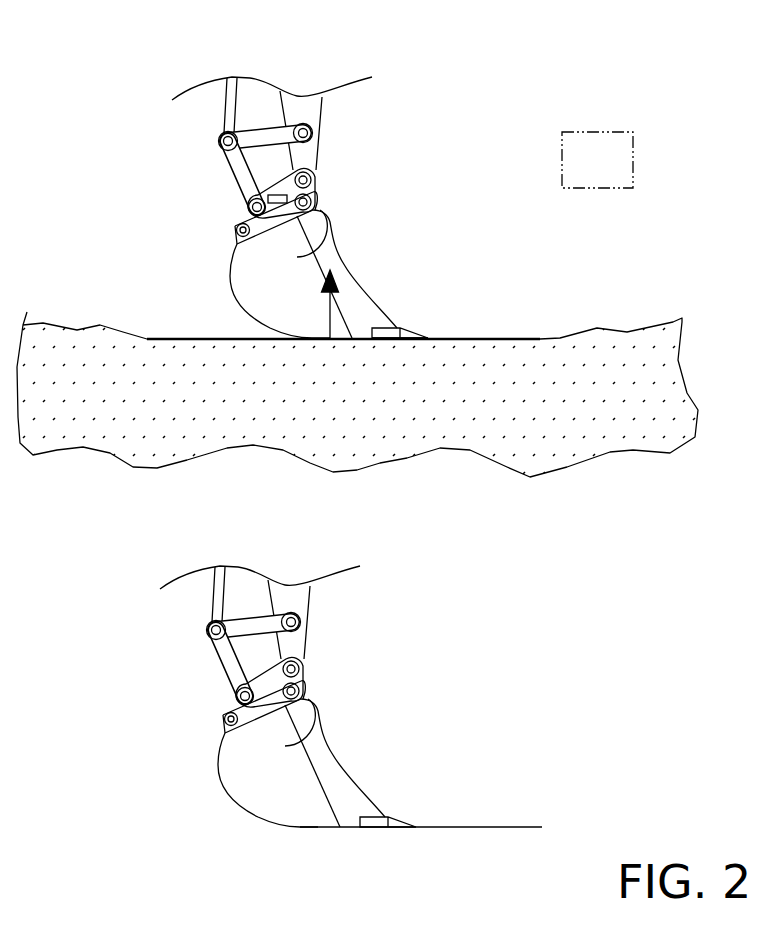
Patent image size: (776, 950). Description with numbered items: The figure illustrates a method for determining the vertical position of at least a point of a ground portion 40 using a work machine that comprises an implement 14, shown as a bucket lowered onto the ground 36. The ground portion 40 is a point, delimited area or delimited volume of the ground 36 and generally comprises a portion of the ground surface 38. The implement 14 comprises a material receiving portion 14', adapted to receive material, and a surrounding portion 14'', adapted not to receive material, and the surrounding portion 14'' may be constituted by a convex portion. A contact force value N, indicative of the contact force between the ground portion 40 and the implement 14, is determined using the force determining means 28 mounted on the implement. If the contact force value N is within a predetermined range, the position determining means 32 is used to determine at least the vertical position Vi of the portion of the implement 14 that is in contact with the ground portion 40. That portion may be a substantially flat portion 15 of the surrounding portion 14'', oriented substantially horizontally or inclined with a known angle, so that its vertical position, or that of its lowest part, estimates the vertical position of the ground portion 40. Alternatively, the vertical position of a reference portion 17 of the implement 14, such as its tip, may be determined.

The implement 14 is at (316, 478).
The reference portion 17 is at (428, 330).
The force determining means 28 is at (278, 195).
The position determining means 32 is at (633, 175).
The ground 36 is at (613, 375).
The ground surface 38 is at (543, 338).
The ground portion 40 is at (329, 340).
The substantially flat portion 15 is at (387, 342).
The contact force value N is at (332, 316).
The material receiving portion 14' is at (454, 230).
The surrounding portion 14'' is at (168, 293).
The vertical position Vi is at (513, 827).